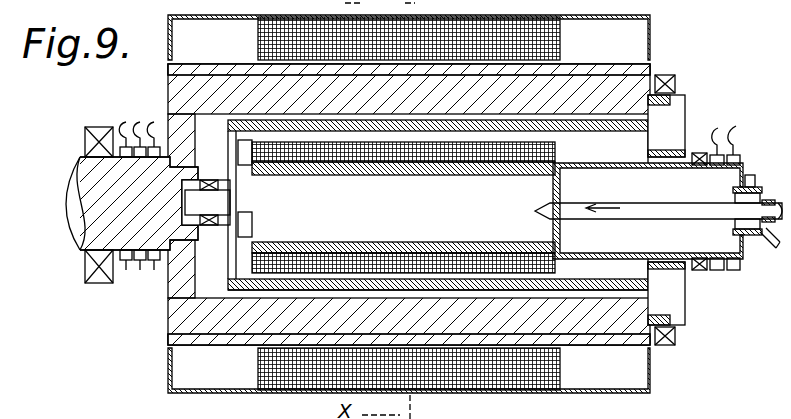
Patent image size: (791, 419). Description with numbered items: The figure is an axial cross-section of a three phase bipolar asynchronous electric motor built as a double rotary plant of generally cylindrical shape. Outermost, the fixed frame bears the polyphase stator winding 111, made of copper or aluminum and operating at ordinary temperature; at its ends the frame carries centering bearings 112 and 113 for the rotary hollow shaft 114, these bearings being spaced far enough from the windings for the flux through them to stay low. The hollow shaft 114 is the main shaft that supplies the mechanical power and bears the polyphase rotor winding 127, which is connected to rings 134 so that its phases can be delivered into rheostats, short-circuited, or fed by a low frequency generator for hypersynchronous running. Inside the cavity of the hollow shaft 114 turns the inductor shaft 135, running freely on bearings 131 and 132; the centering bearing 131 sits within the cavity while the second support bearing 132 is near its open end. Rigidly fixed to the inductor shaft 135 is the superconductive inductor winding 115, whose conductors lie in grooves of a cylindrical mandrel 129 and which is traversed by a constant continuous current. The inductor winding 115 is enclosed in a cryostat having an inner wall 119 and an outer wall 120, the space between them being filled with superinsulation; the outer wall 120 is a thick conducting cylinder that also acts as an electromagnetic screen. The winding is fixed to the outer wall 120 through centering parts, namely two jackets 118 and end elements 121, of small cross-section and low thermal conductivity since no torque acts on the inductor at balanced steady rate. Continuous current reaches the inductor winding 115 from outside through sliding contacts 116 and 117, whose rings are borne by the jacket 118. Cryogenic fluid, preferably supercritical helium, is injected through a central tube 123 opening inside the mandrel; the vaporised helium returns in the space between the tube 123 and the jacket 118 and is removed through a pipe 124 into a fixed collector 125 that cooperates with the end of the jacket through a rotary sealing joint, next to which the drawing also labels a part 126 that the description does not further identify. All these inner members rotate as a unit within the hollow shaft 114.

The stator winding 111 is at (553, 32).
The centering bearing 112 is at (100, 130).
The centering bearing 113 is at (672, 82).
The hollow shaft 114 is at (210, 82).
The inductor winding 115 is at (315, 160).
The sliding contact 116 is at (714, 154).
The sliding contact 117 is at (735, 156).
The jacket 118 is at (247, 155).
The inner wall of cryostat 119 is at (378, 283).
The outer wall of cryostat 120 is at (305, 296).
The end element 121 is at (238, 226).
The central tube 123 is at (703, 208).
The pipe 124 is at (772, 246).
The fixed collector 125 is at (757, 190).
The flange 126 is at (745, 232).
The rotor winding 127 is at (172, 334).
The mandrel 129 is at (462, 234).
The centering bearing 131 is at (232, 187).
The second support bearing 132 is at (703, 270).
The rings 134 is at (130, 262).
The inductor shaft 135 is at (200, 205).